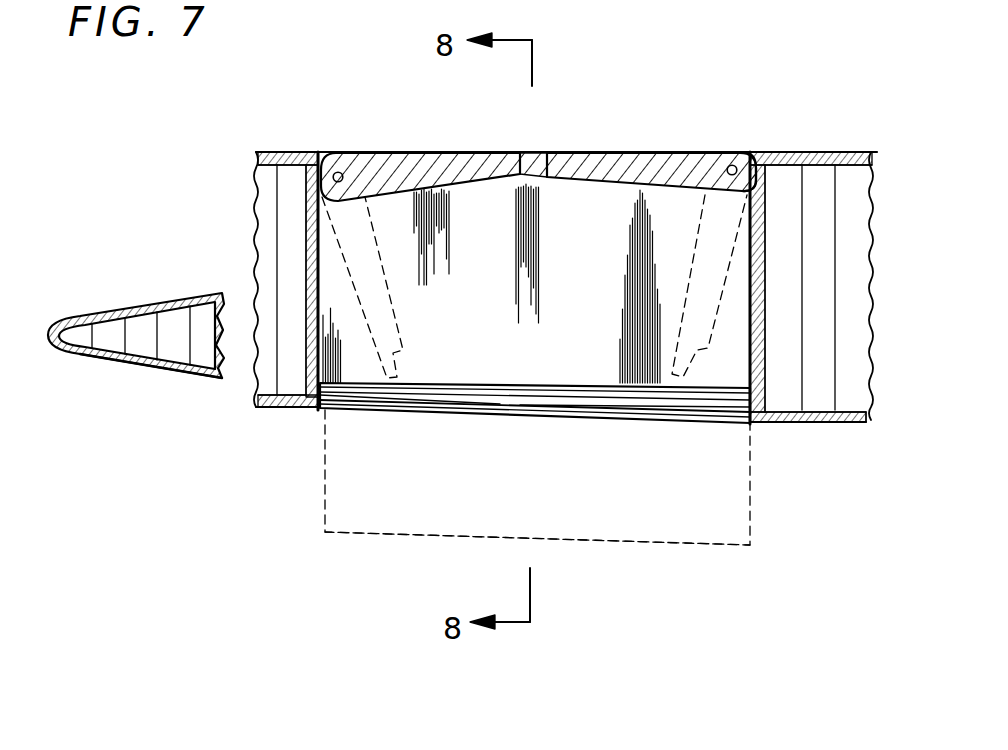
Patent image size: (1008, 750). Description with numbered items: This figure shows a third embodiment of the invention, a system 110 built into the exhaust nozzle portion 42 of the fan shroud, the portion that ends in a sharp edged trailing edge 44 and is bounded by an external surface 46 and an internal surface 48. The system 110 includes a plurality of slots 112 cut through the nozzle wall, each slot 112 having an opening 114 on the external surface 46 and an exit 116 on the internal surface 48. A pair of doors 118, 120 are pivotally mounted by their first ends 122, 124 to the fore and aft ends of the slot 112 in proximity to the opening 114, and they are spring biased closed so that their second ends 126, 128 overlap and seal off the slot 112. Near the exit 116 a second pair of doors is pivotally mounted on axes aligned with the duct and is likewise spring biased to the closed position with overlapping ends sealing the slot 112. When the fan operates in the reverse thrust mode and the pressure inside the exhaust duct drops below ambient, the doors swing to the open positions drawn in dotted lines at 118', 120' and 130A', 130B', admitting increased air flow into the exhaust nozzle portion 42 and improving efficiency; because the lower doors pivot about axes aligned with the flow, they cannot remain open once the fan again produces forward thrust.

The exhaust nozzle portion 42 is at (815, 149).
The trailing edge 44 is at (273, 150).
The external surface 46 is at (152, 297).
The internal surface 48 is at (150, 380).
The system 110 is at (693, 74).
The slot 112 is at (591, 361).
The opening 114 is at (622, 148).
The exit 116 is at (512, 423).
The door 118 is at (386, 138).
The open position of door 118' is at (409, 287).
The door 120 is at (708, 135).
The open position of door 120' is at (655, 286).
The first end 122 is at (748, 152).
The first end 124 is at (326, 150).
The second end 126 is at (524, 153).
The second end 128 is at (546, 152).
The open position of door 130A' is at (460, 497).
The open position of door 130B' is at (537, 484).